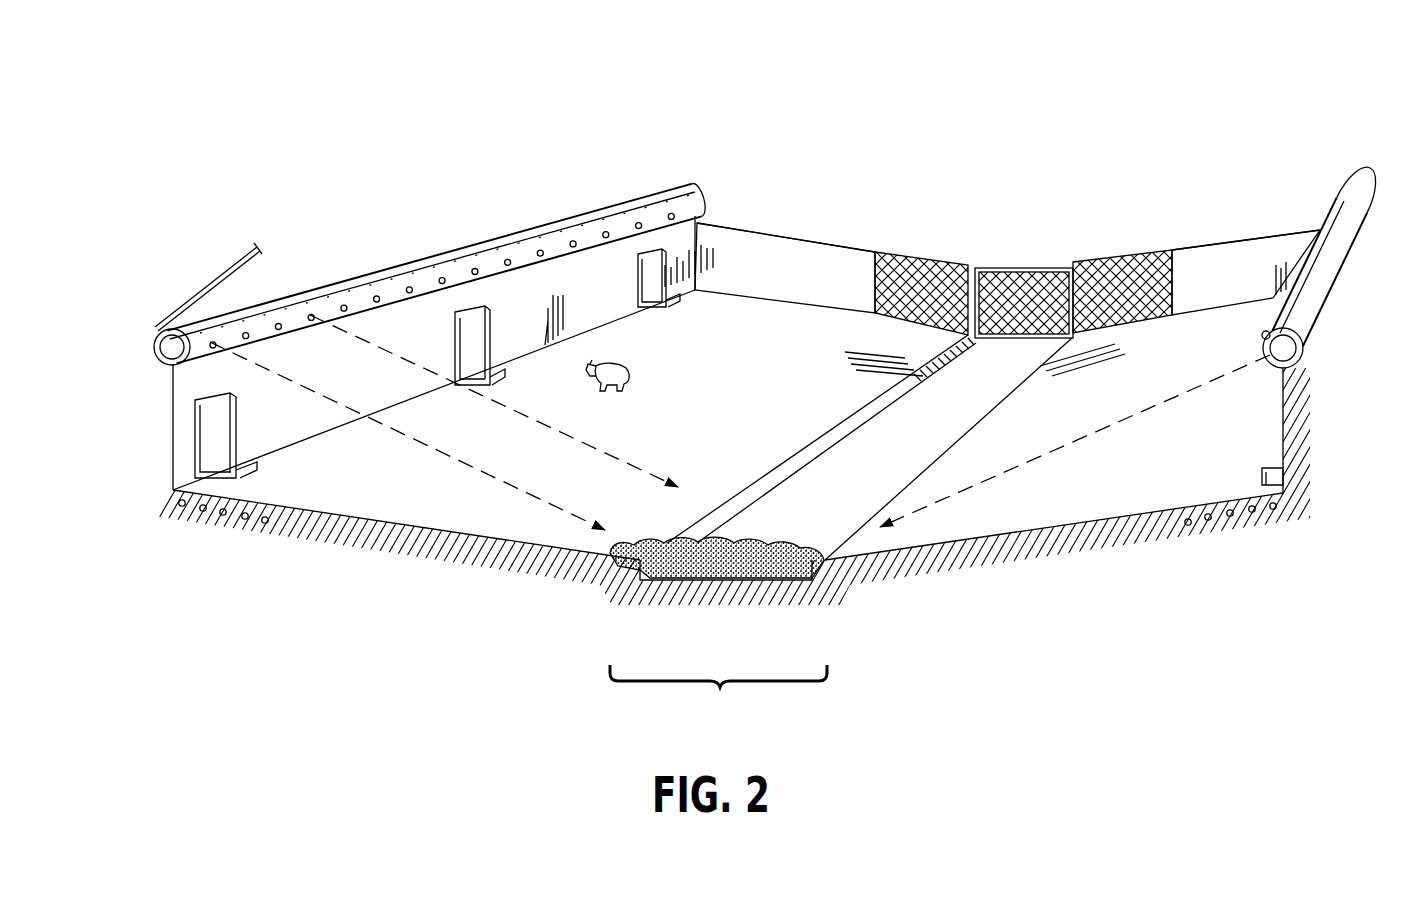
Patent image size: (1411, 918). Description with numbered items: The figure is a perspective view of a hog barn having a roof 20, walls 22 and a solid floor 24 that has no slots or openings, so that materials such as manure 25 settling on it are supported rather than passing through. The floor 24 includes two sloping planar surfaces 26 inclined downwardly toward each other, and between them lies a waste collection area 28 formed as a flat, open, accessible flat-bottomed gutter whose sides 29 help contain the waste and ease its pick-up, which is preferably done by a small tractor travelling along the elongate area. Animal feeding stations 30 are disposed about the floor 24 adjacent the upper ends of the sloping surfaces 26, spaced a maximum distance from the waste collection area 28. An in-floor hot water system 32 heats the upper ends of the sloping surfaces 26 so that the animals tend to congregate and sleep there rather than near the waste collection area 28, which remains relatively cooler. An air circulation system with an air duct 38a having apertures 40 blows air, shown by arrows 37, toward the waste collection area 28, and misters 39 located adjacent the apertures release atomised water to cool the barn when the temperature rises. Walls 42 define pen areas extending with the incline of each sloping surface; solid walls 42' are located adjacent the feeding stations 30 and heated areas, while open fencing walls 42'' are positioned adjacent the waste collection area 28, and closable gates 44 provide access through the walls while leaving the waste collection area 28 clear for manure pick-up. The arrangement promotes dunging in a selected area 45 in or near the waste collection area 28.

The roof 20 is at (227, 266).
The walls 22 is at (150, 420).
The floor 24 is at (428, 525).
The manure 25 is at (690, 560).
The sloping planar surfaces 26 is at (756, 406).
The waste collection area 28 is at (915, 423).
The sides of the gutter 29 is at (757, 486).
The animal feeding stations 30 is at (228, 425).
The in-floor hot water system 32 is at (195, 516).
The arrows 37 is at (628, 462).
The air duct 38a is at (463, 265).
The misters 39 is at (378, 278).
The apertures 40 is at (583, 237).
The walls 42 is at (1008, 190).
The solid walls 42' is at (1007, 236).
The open walls 42'' is at (1023, 261).
The closable gates 44 is at (1022, 280).
The selected dunging area 45 is at (718, 697).